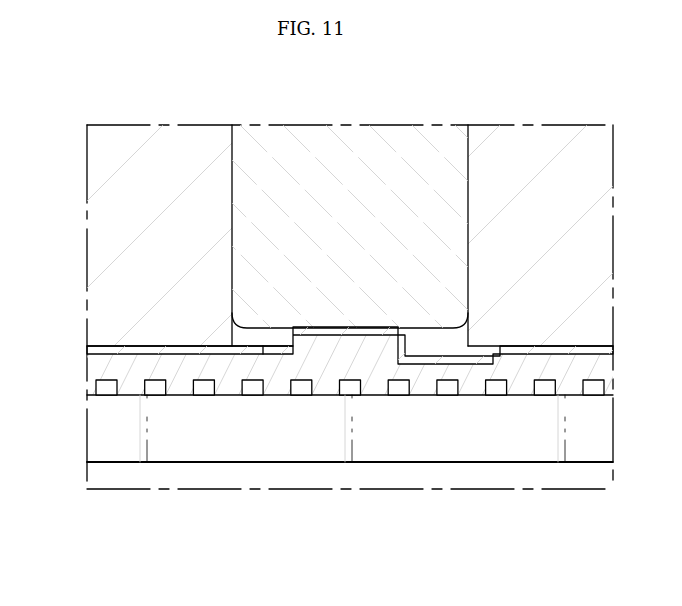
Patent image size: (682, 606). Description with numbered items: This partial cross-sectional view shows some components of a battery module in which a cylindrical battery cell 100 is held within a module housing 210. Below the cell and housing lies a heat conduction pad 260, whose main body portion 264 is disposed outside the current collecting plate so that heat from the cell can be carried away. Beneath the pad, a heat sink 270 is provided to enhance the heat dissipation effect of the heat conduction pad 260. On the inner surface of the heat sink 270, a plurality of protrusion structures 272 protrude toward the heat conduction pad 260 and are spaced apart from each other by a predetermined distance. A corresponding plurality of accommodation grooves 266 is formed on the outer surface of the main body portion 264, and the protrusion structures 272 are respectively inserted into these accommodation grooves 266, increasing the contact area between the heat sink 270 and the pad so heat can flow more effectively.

The cylindrical battery cell 100 is at (345, 124).
The module housing 210 is at (110, 195).
The heat conduction pad 260 is at (88, 373).
The main body portion 264 is at (425, 373).
The accommodation groove 266 is at (586, 380).
The heat sink 270 is at (88, 433).
The protrusion structure 272 is at (205, 380).